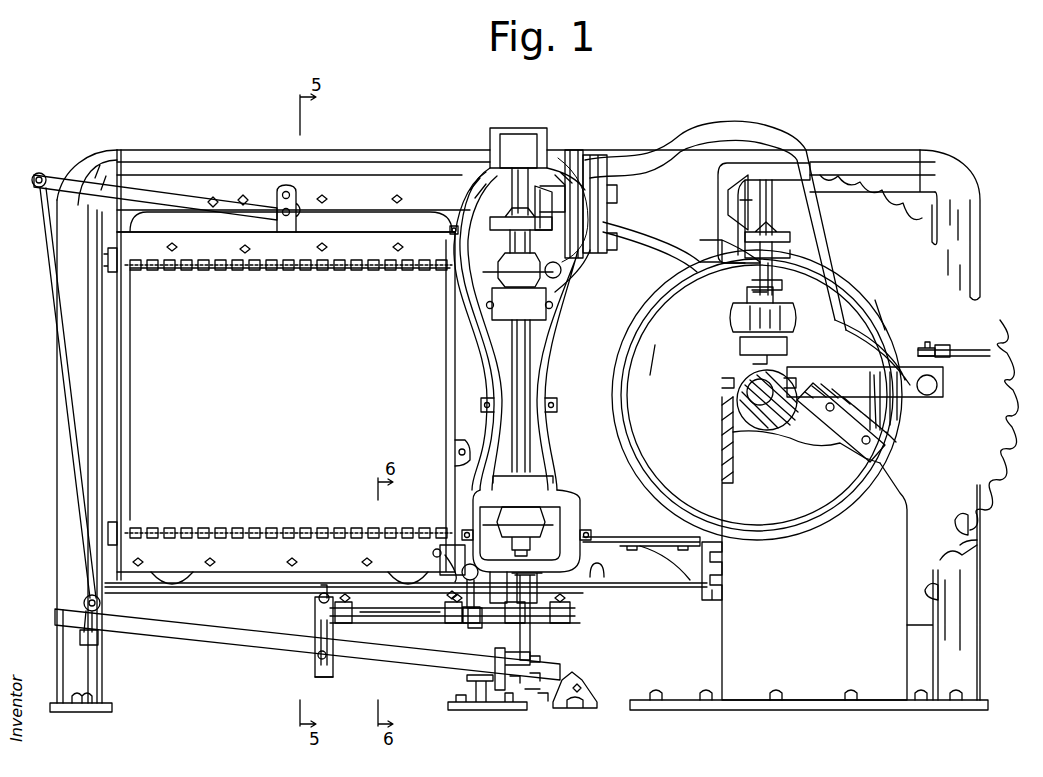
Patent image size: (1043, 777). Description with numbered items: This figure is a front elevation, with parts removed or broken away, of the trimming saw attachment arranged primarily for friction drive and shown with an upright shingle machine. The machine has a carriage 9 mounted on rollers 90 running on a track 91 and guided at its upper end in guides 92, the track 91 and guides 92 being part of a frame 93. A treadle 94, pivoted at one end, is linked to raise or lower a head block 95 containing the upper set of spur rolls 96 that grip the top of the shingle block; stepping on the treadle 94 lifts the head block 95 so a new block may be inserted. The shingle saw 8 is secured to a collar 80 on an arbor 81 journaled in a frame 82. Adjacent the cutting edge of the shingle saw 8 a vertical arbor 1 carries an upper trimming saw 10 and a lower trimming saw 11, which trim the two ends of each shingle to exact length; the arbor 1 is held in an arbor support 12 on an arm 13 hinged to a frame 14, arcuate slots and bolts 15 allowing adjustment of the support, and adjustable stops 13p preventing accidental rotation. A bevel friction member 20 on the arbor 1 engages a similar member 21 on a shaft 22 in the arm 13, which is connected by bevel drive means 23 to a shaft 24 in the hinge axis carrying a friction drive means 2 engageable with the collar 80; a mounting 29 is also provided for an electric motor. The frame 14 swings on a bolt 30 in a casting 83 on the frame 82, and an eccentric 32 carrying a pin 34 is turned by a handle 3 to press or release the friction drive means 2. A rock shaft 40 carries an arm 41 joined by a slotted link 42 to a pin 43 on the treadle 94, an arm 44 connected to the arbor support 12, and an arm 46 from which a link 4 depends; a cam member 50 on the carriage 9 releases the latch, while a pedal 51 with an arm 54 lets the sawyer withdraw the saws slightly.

The arbor 1 is at (527, 365).
The friction drive means 2 is at (735, 321).
The handle 3 is at (950, 354).
The link 4 is at (530, 632).
The shingle saw 8 is at (809, 430).
The carriage 9 is at (120, 392).
The upper trimming saw 10 is at (560, 275).
The lower trimming saw 11 is at (552, 518).
The arbor support 12 is at (545, 440).
The arm 13 is at (640, 182).
The adjustable stops 13p is at (598, 150).
The frame 14 is at (790, 268).
The arcuate slots and bolts 15 is at (612, 165).
The bevel friction member 20 is at (520, 222).
The bevel friction member 21 is at (562, 165).
The shaft 22 is at (730, 175).
The bevel drive means 23 is at (735, 222).
The shaft 24 is at (775, 207).
The motor mounting means 29 is at (522, 145).
The bolt 30 is at (885, 337).
The eccentric 32 is at (945, 350).
The pin 34 is at (945, 345).
The rock shaft 40 is at (425, 624).
The arm 41 is at (316, 601).
The slotted link 42 is at (332, 679).
The pin or bolt 43 is at (318, 658).
The arm 44 is at (468, 624).
The arm 46 is at (540, 606).
The cam member 50 is at (425, 563).
The pedal 51 is at (470, 681).
The arm 54 is at (495, 667).
The collar 80 is at (757, 395).
The arbor 81 is at (738, 393).
The frame 82 is at (814, 541).
The casting 83 is at (865, 398).
The rollers 90 is at (172, 573).
The track 91 is at (255, 582).
The guides 92 is at (368, 160).
The frame 93 is at (58, 330).
The treadle 94 is at (200, 640).
The head block 95 is at (372, 248).
The spur rolls 96 is at (198, 272).